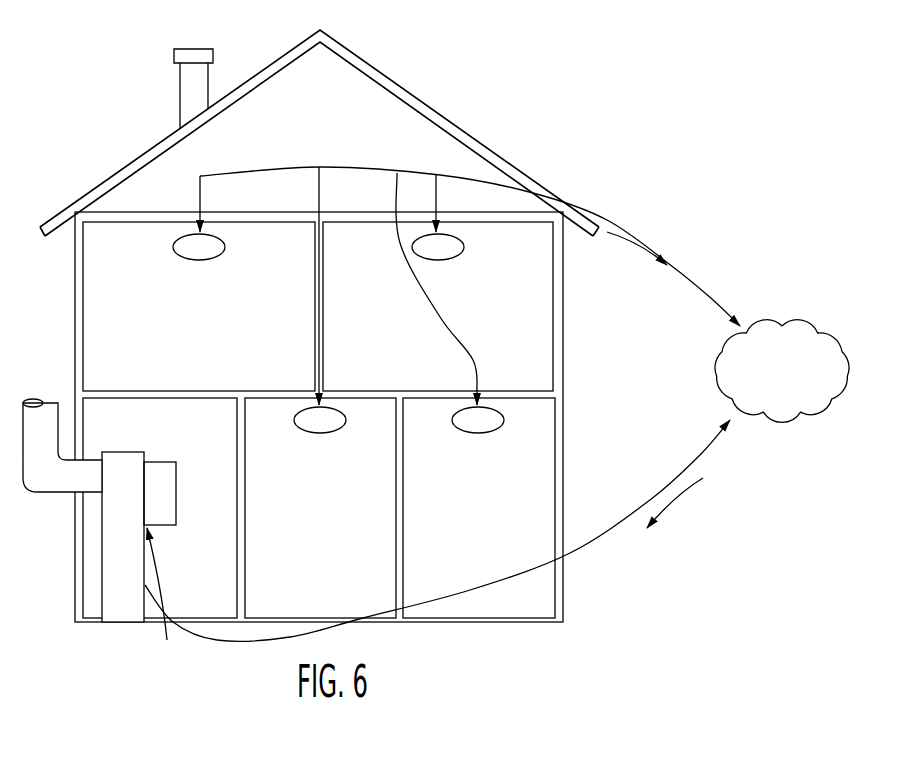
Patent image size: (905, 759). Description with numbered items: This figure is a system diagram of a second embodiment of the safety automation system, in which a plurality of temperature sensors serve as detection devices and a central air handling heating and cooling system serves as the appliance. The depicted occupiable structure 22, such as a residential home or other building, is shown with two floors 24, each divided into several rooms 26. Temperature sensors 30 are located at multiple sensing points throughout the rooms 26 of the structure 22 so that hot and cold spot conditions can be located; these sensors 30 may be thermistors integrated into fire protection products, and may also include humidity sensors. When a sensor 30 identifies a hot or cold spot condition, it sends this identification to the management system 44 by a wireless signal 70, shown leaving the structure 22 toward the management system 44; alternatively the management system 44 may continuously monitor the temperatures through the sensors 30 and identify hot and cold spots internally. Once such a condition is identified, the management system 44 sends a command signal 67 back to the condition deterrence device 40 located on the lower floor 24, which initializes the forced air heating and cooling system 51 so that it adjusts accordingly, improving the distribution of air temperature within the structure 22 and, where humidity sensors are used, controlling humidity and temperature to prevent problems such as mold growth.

The occupiable structure 22 is at (465, 82).
The floors 24 is at (563, 278).
The rooms 26 is at (212, 342).
The temperature sensors 30 is at (203, 258).
The condition deterrence device 40 is at (176, 495).
The management system 44 is at (807, 333).
The forced air heating and cooling system 51 is at (162, 602).
The command signal 67 is at (680, 500).
The wireless signal 70 is at (643, 250).